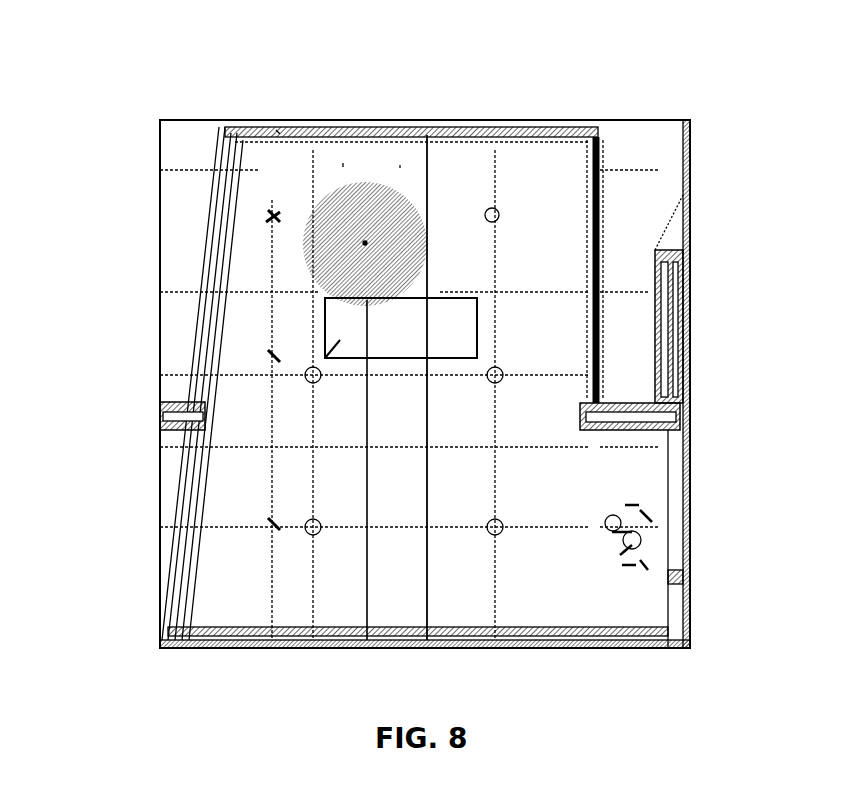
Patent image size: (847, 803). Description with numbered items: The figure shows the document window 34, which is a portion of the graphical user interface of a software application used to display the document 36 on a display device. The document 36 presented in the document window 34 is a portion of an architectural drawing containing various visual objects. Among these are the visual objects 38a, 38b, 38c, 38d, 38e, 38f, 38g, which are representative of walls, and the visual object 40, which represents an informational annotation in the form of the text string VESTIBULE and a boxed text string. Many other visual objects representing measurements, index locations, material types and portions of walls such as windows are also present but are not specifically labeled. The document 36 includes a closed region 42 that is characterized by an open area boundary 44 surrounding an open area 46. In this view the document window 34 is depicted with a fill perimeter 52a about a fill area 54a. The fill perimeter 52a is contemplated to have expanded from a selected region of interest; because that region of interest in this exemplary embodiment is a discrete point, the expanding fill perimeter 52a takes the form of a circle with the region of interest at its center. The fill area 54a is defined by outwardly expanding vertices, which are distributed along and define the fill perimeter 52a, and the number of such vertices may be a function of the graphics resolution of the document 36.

The document window 34 is at (622, 118).
The document 36 is at (655, 157).
The visual object 38a is at (668, 318).
The visual object 38b is at (617, 422).
The visual object 38c is at (598, 262).
The visual object 38d is at (305, 128).
The visual object 38e is at (200, 322).
The visual object 38f is at (232, 630).
The visual object 38g is at (678, 618).
The visual object 40 is at (345, 338).
The closed region 42 is at (343, 163).
The open area boundary 44 is at (276, 130).
The open area 46 is at (400, 165).
The fill perimeter 52a is at (420, 200).
The fill area 54a is at (365, 243).